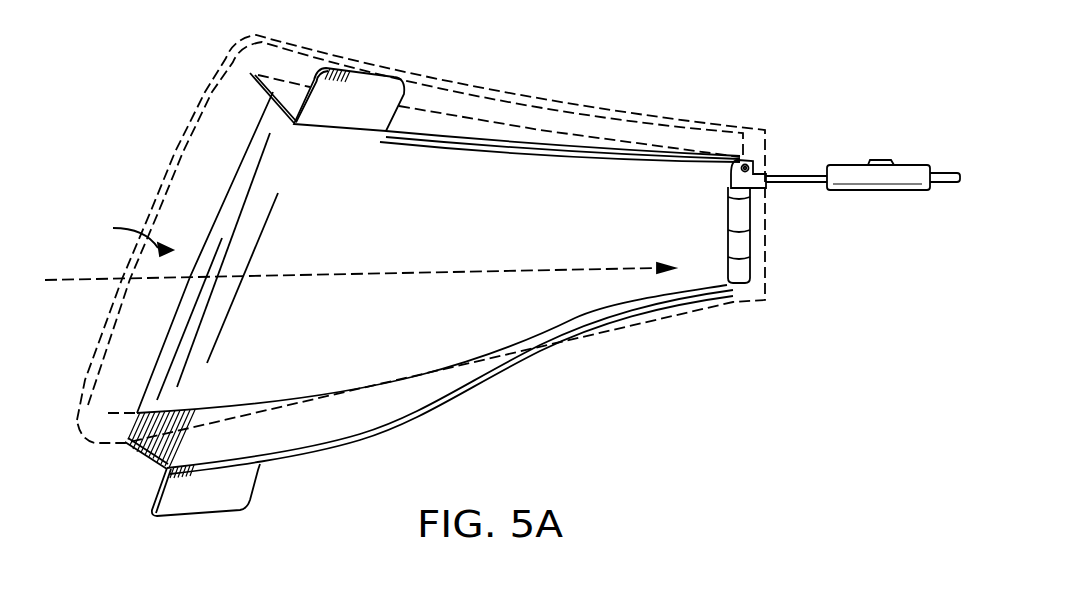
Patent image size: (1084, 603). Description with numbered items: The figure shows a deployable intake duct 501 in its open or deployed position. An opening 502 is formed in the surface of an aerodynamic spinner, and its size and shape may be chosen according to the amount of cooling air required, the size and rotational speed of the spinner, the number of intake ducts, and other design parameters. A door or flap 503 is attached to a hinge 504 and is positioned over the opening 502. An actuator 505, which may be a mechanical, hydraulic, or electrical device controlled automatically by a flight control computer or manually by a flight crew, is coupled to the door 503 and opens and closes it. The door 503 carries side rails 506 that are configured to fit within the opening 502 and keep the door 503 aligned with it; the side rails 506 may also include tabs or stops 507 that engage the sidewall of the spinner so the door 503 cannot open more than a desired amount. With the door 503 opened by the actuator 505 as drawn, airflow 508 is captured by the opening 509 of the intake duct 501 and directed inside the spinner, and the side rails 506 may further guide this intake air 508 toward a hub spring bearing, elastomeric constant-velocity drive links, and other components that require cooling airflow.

The deployable intake duct 501 is at (654, 61).
The opening 502 is at (228, 192).
The door 503 is at (187, 128).
The hinge 504 is at (752, 237).
The actuator 505 is at (887, 192).
The side rails 506 is at (448, 142).
The tabs or stops 507 is at (352, 118).
The airflow 508 is at (73, 281).
The opening of the intake duct 509 is at (120, 235).